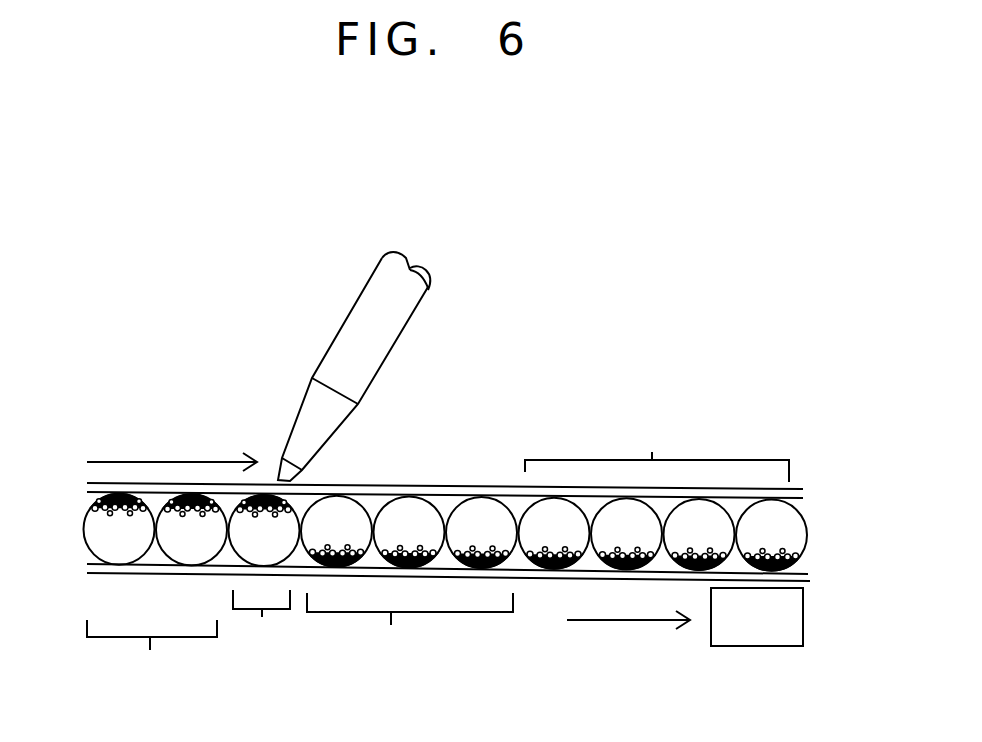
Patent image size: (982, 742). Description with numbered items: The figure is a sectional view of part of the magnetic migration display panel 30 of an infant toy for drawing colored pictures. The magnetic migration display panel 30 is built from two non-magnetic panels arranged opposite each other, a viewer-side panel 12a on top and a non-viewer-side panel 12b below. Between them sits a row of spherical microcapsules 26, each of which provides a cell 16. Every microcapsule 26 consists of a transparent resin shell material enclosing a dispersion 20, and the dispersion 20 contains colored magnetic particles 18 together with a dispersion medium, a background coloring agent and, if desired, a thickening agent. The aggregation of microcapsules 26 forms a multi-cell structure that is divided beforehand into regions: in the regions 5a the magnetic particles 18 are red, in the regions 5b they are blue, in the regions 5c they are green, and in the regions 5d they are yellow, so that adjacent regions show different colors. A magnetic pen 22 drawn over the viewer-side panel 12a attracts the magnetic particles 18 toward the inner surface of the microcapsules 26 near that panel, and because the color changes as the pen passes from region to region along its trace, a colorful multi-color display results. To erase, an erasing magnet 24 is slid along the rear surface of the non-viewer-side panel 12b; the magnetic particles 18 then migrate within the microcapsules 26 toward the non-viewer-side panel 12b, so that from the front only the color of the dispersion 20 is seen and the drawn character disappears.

The region 5a is at (152, 655).
The region 5b is at (261, 624).
The region 5c is at (410, 629).
The region 5d is at (657, 445).
The viewer-side panel 12a is at (803, 490).
The non-viewer-side panel 12b is at (797, 575).
The cell 16 is at (408, 515).
The magnetic particles 18 is at (117, 508).
The dispersion 20 is at (112, 546).
The magnetic pen 22 is at (318, 422).
The erasing magnet 24 is at (737, 638).
The microcapsules 26 is at (163, 556).
The magnetic migration display panel 30 is at (452, 457).